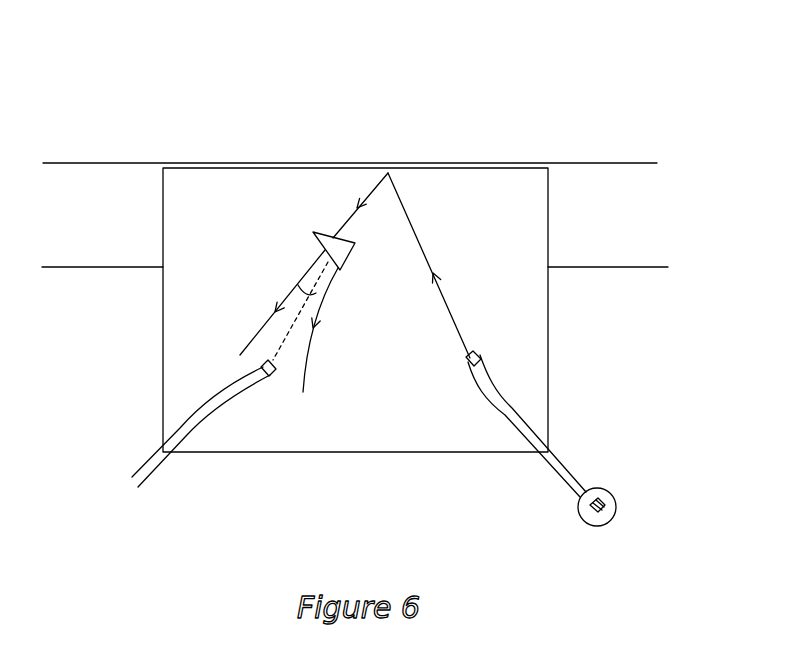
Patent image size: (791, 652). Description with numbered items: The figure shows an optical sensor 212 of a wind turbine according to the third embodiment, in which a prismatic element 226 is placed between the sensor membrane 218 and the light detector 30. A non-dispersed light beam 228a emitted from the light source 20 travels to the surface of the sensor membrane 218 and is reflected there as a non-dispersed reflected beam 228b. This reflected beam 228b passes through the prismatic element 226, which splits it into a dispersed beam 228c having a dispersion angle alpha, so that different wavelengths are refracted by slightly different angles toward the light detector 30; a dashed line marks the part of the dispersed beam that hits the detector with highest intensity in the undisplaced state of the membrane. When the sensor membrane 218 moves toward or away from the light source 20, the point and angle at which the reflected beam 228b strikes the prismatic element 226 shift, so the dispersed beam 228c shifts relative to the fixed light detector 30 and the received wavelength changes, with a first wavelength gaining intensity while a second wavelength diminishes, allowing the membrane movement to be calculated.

The sensor 212 is at (453, 72).
The sensor membrane 218 is at (503, 167).
The prismatic element 226 is at (322, 233).
The non-dispersed light beam 228a is at (457, 320).
The non-dispersed reflected beam 228b is at (363, 197).
The dispersed beam 228c is at (262, 340).
The light detector 30 is at (137, 453).
The light source 20 is at (575, 460).